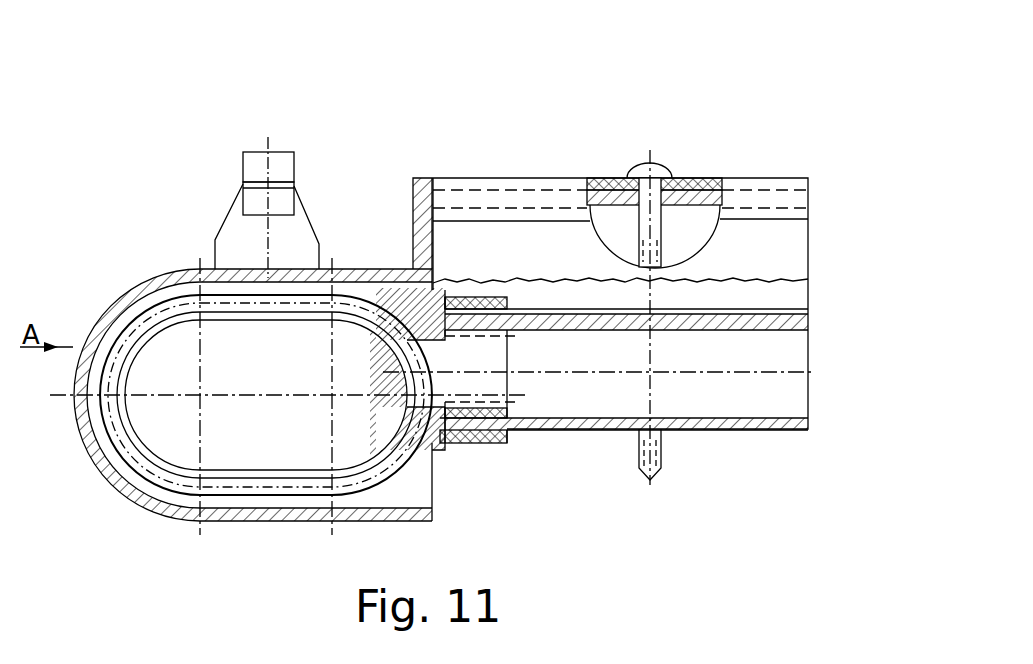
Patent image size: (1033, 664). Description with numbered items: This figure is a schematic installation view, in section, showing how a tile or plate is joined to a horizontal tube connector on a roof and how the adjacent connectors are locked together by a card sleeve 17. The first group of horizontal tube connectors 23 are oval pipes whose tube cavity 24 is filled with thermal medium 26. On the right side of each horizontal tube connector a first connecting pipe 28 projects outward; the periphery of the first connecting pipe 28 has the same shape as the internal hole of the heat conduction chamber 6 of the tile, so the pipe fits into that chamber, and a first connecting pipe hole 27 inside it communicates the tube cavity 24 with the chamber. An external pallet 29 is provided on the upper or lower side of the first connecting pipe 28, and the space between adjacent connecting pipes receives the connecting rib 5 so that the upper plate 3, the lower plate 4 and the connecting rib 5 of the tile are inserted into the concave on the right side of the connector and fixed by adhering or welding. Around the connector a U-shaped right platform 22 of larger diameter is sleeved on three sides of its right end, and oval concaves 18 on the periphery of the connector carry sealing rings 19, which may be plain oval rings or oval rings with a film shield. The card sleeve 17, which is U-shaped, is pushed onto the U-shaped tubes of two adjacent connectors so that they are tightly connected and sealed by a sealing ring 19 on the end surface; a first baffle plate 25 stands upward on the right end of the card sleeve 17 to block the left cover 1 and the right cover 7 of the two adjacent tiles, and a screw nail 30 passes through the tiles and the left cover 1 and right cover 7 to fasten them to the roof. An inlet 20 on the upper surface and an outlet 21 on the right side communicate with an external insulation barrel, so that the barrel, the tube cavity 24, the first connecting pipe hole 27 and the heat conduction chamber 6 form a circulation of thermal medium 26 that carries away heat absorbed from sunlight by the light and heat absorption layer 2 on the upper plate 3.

The left cover 1 is at (808, 178).
The light and heat absorption layer 2 is at (673, 308).
The upper plate 3 is at (715, 310).
The lower plate 4 is at (636, 412).
The connecting rib 5 is at (752, 360).
The heat conduction chamber 6 is at (752, 397).
The right cover 7 is at (722, 178).
The card sleeve 17 is at (90, 330).
The concave 18 is at (118, 320).
The sealing ring 19 is at (160, 290).
The inlet 20 is at (249, 163).
The outlet 21 is at (273, 198).
The U-shaped right platform 22 is at (277, 292).
The first group of horizontal tube connectors 23 is at (284, 317).
The tube cavity 24 is at (272, 378).
The first baffle plate 25 is at (355, 365).
The thermal medium 26 is at (458, 362).
The first connecting pipe hole 27 is at (515, 350).
The first connecting pipe 28 is at (548, 300).
The external pallet 29 is at (600, 230).
The screw nail 30 is at (631, 172).